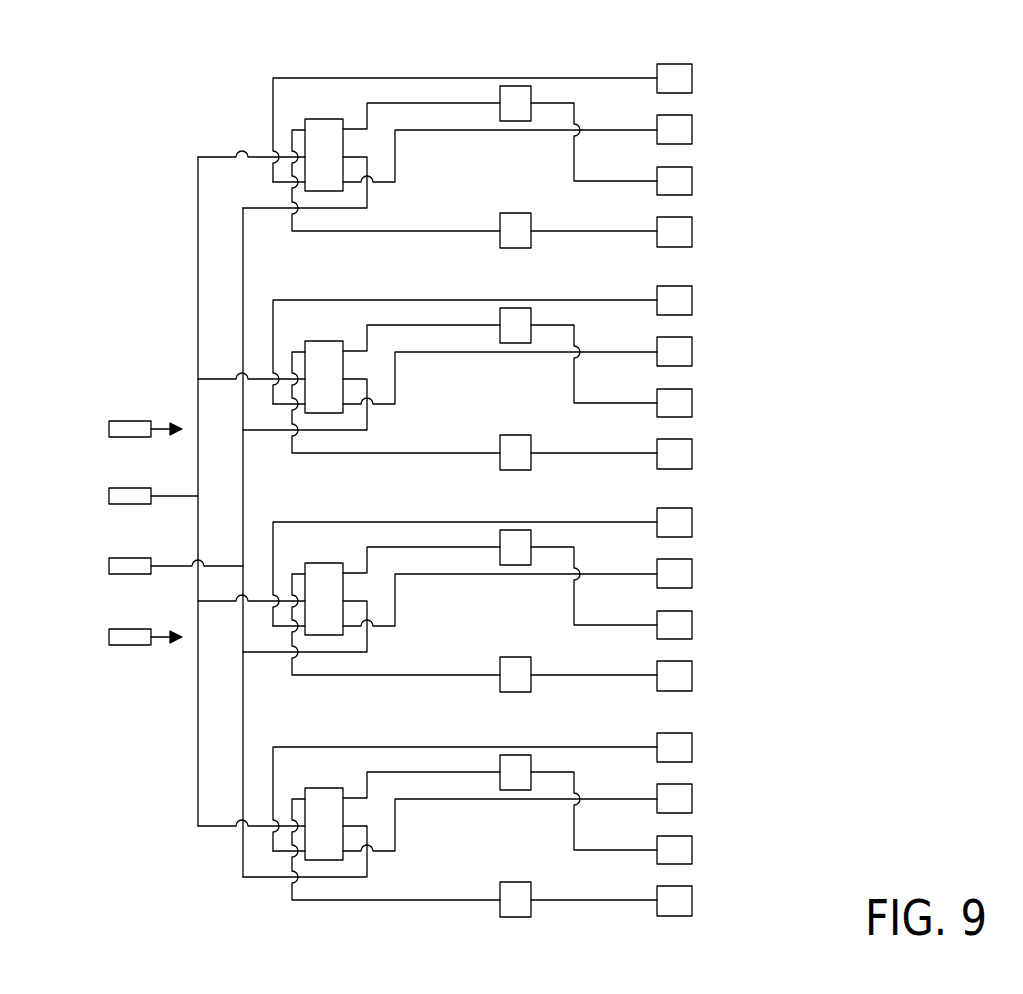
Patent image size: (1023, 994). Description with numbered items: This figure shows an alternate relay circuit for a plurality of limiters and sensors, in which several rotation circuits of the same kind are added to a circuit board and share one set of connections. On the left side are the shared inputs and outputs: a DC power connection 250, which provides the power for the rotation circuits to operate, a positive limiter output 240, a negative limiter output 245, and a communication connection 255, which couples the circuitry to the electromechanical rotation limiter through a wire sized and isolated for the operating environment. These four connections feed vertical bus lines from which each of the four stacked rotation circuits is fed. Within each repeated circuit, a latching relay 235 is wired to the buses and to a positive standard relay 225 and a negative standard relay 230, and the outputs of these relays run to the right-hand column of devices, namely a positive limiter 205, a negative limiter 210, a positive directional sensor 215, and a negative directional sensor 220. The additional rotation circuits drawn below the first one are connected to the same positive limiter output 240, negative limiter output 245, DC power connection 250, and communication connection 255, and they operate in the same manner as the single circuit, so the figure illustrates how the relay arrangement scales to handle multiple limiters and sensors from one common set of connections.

The positive limiter 205 is at (692, 76).
The negative limiter 210 is at (692, 127).
The positive directional sensor 215 is at (692, 177).
The negative directional sensor 220 is at (692, 227).
The positive standard relay 225 is at (513, 95).
The negative standard relay 230 is at (523, 237).
The latching relay 235 is at (323, 130).
The positive limiter output 240 is at (108, 495).
The negative limiter output 245 is at (108, 566).
The DC power connection 250 is at (108, 428).
The communication connection 255 is at (108, 637).